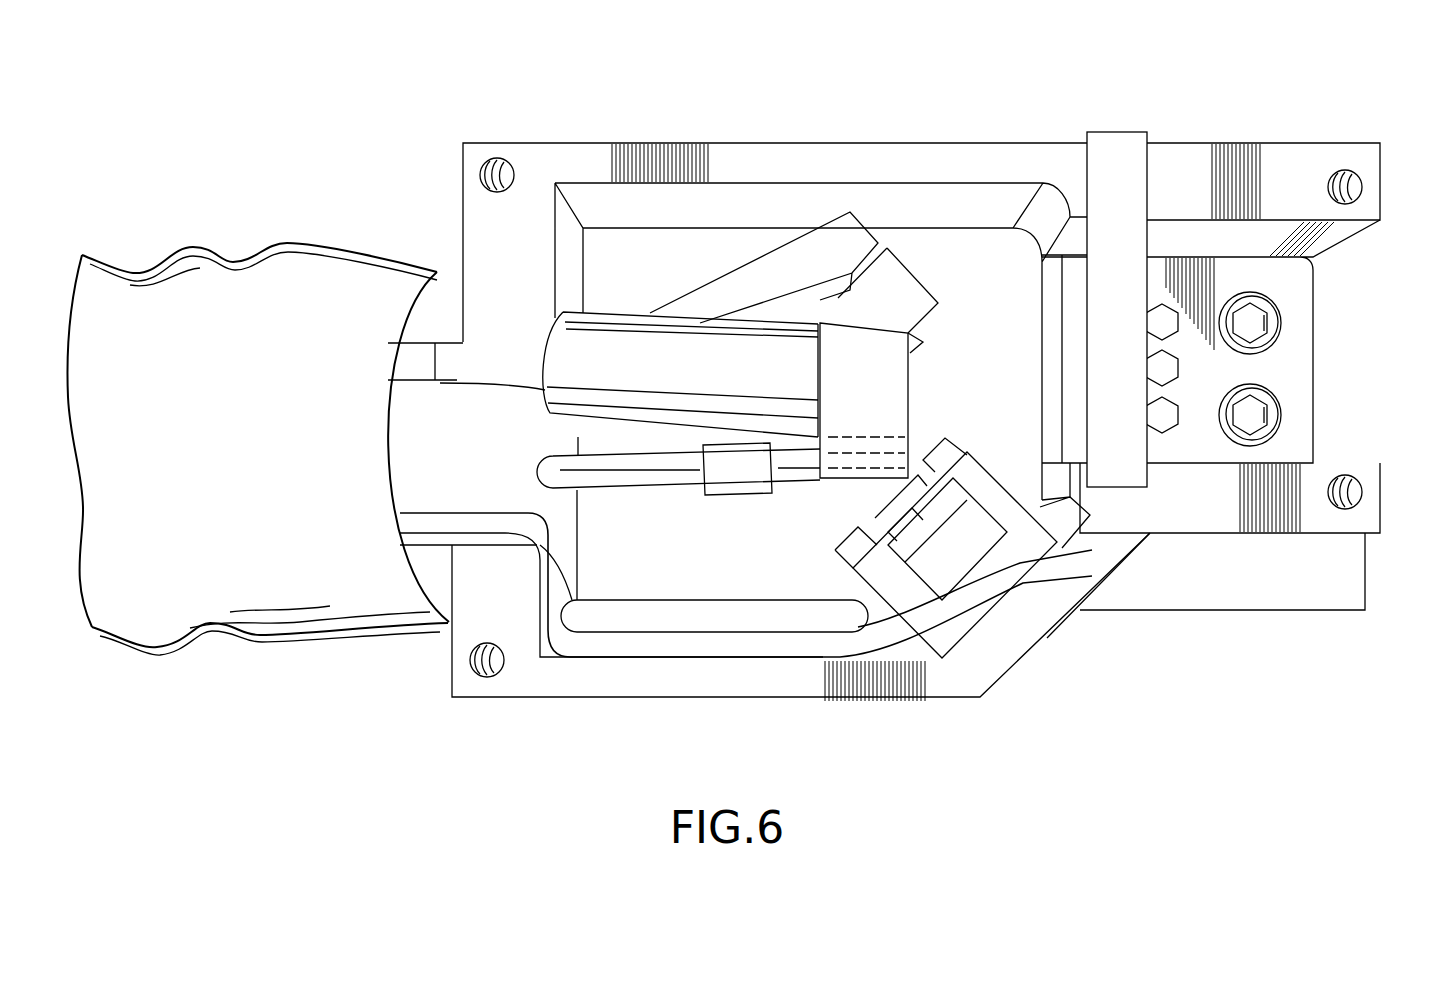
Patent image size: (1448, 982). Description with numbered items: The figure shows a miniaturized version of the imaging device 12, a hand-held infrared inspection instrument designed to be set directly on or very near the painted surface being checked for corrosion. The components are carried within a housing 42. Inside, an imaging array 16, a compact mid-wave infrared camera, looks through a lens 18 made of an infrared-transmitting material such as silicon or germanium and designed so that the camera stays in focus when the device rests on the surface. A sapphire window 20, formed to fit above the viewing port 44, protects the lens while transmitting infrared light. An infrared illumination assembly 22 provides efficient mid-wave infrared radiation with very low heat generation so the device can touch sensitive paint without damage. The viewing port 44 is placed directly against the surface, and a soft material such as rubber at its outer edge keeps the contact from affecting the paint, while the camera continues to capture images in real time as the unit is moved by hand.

The imaging system 12 is at (1122, 691).
The imaging array 16 is at (697, 363).
The lens 18 is at (852, 432).
The sapphire window 20 is at (1122, 150).
The infrared illumination 22 is at (953, 545).
The housing 42 is at (575, 143).
The viewing port 44 is at (1345, 253).